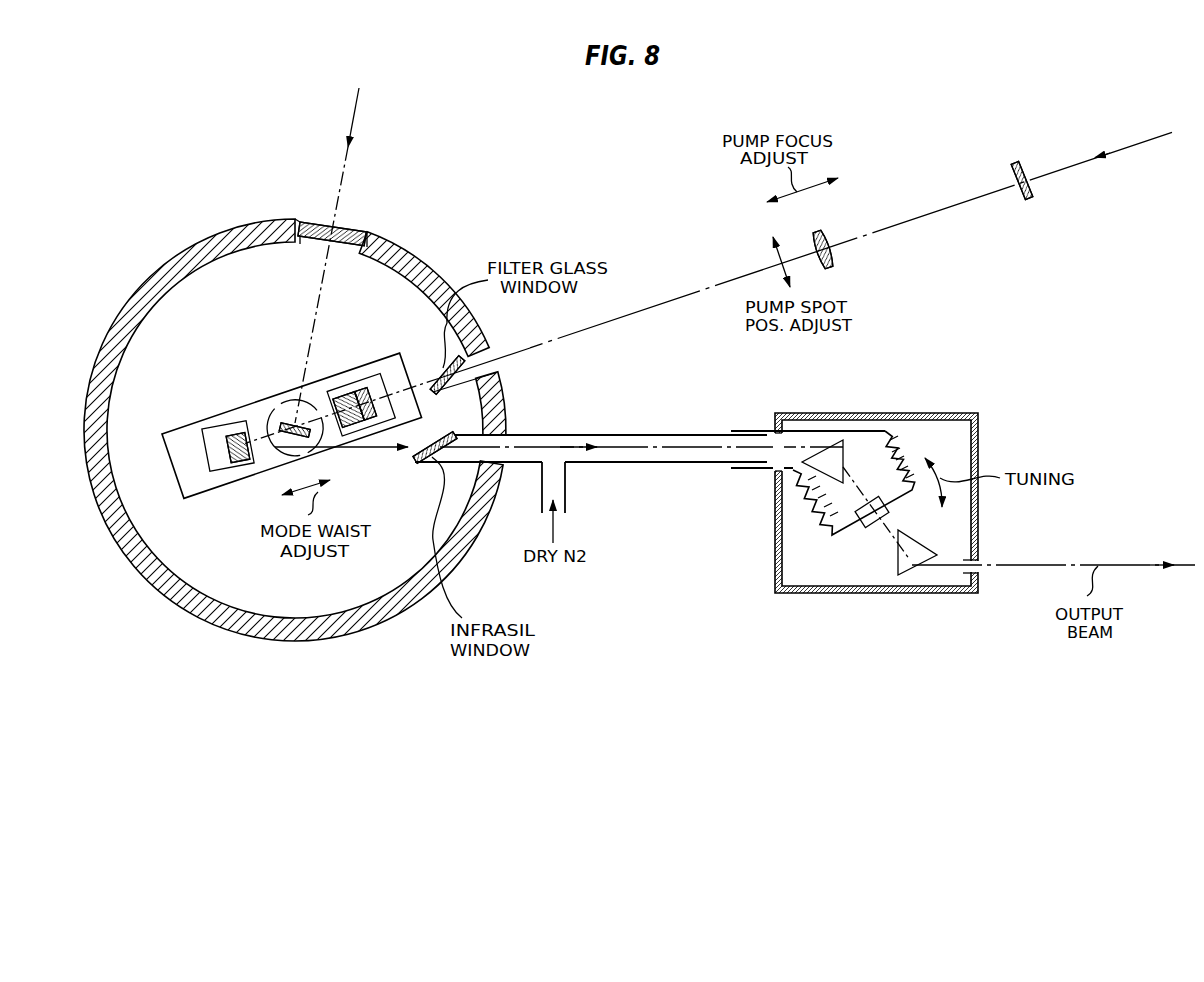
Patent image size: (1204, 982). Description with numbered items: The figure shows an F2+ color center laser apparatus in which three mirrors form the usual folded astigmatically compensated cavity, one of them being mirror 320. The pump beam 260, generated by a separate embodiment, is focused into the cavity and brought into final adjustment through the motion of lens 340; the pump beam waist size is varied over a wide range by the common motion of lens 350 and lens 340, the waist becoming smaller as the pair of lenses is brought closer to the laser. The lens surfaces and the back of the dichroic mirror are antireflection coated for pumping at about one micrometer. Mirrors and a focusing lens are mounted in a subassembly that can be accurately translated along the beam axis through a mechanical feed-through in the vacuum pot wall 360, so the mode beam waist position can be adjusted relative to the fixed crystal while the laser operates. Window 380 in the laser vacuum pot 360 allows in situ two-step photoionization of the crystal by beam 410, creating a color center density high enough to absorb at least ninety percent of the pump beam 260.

The pump beam 260 is at (1125, 148).
The mirror 320 is at (869, 528).
The lens 340 is at (833, 264).
The lens 350 is at (1030, 198).
The vacuum pot wall 360 is at (179, 257).
The window 380 is at (348, 226).
The beam 410 is at (353, 112).